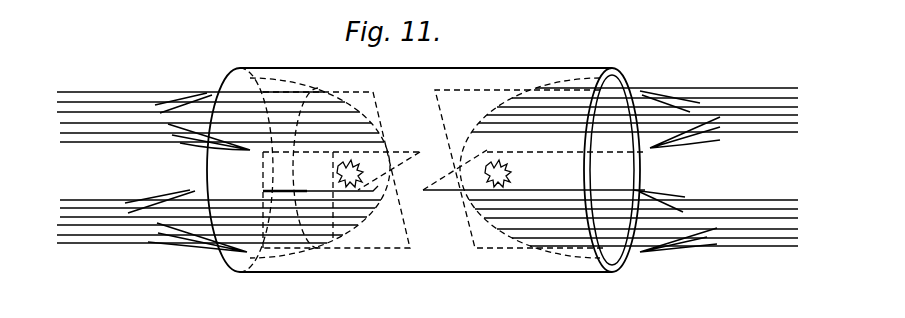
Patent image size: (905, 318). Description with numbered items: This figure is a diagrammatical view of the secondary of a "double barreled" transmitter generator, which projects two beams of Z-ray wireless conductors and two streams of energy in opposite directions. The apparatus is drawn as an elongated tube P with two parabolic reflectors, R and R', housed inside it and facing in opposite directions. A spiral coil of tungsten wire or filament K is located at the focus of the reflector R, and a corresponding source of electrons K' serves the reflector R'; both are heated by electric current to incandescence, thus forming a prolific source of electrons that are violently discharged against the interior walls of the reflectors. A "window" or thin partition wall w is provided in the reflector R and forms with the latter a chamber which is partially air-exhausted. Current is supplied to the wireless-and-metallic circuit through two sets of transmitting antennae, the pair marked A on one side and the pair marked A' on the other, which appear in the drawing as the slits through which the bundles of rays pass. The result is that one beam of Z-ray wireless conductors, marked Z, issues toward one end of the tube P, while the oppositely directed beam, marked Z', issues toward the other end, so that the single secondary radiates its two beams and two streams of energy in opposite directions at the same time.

The tube P is at (440, 258).
The parabolic reflector R is at (330, 168).
The parabolic reflector R' is at (520, 168).
The window w is at (341, 168).
The spiral coil of tungsten wire K is at (378, 171).
The source of electrons K' is at (534, 170).
The Z-ray wireless conductors Z is at (426, 164).
The Z-ray wireless conductors Z' is at (429, 165).
The transmitting antennae A is at (432, 170).
The transmitting antennae A' is at (422, 165).